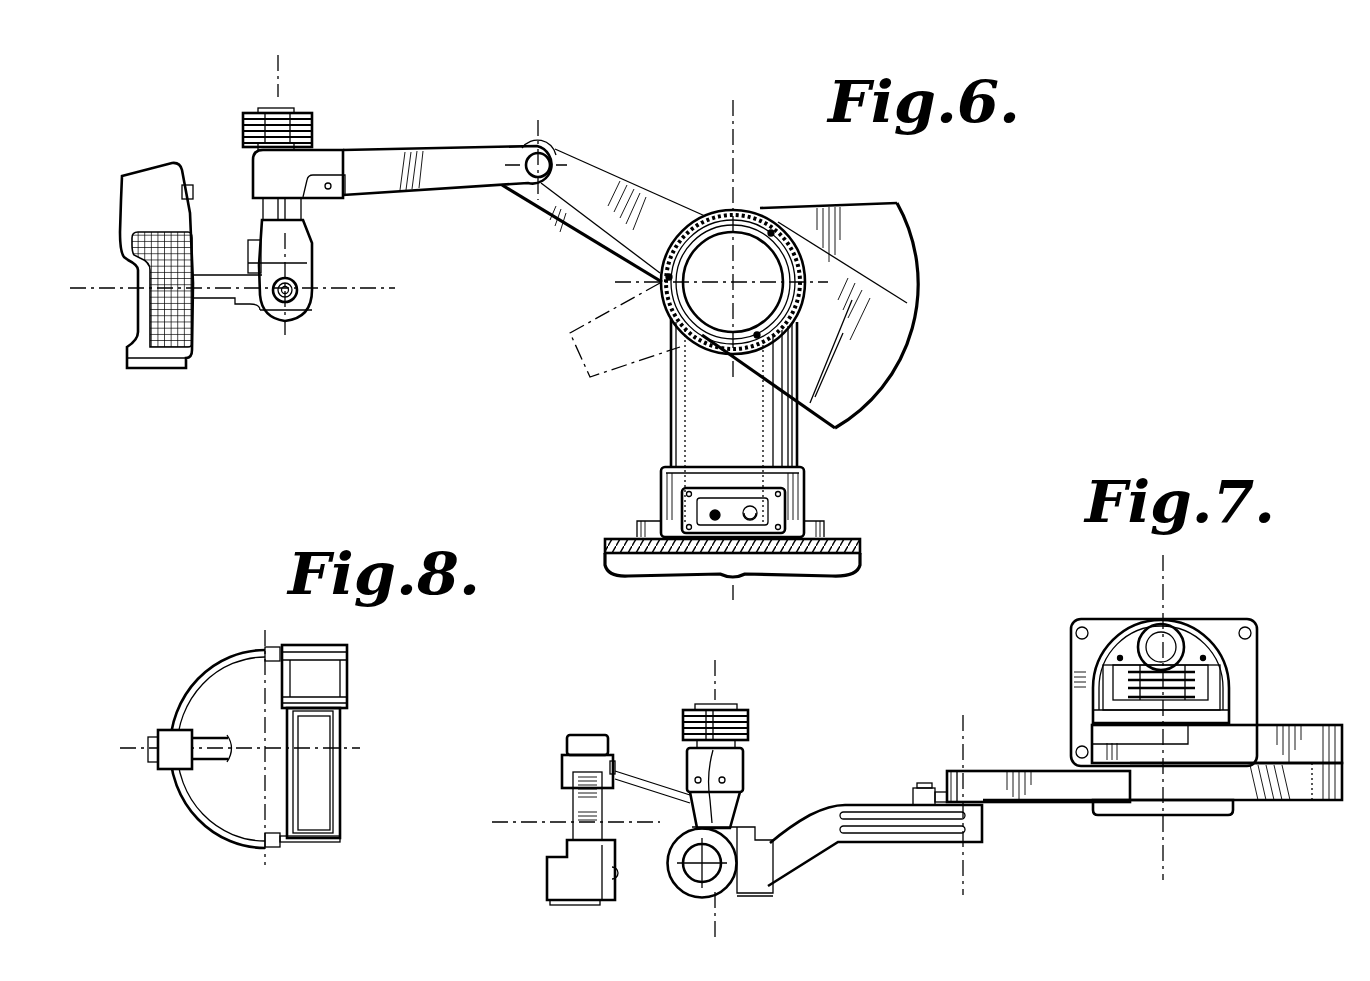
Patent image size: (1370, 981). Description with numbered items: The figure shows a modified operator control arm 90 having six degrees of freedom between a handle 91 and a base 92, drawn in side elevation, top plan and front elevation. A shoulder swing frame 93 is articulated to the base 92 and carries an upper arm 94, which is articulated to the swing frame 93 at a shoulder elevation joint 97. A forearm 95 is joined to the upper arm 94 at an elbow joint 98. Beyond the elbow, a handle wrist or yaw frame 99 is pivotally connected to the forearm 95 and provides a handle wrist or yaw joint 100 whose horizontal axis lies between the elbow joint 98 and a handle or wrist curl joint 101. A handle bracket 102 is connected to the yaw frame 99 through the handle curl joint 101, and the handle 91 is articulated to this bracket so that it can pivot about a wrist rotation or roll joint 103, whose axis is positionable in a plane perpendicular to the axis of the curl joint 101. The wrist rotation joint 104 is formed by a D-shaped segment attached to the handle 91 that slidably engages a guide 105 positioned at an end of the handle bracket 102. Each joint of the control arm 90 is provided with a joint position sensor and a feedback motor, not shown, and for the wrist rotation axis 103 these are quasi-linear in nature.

In FIG. 6, the operator control arm 90 is at (550, 135).
In FIG. 7, the operator control arm 90 is at (988, 847).
In FIG. 6, the handle 91 is at (140, 333).
In FIG. 8, the handle 91 is at (332, 791).
In FIG. 7, the handle 91 is at (550, 883).
In FIG. 6, the base 92 is at (808, 505).
In FIG. 7, the base 92 is at (1213, 627).
In FIG. 6, the shoulder swing frame 93 is at (672, 418).
In FIG. 7, the shoulder swing frame 93 is at (1218, 655).
In FIG. 6, the upper arm 94 is at (657, 203).
In FIG. 7, the upper arm 94 is at (1043, 773).
In FIG. 6, the forearm 95 is at (444, 160).
In FIG. 7, the forearm 95 is at (803, 862).
In FIG. 6, the shoulder elevation joint 97 is at (733, 180).
In FIG. 7, the shoulder elevation joint 97 is at (1163, 868).
In FIG. 6, the elbow joint 98 is at (565, 160).
In FIG. 7, the elbow joint 98 is at (961, 737).
In FIG. 6, the handle wrist or yaw frame 99 is at (312, 240).
In FIG. 7, the handle wrist or yaw frame 99 is at (730, 822).
In FIG. 6, the handle wrist or yaw joint 100 is at (278, 74).
In FIG. 7, the handle wrist or yaw joint 100 is at (665, 867).
In FIG. 6, the handle curl joint 101 is at (333, 292).
In FIG. 6, the handle bracket 102 is at (238, 294).
In FIG. 8, the handle bracket 102 is at (215, 737).
In FIG. 7, the handle bracket 102 is at (638, 777).
In FIG. 6, the wrist rotation or roll joint 103 is at (100, 289).
In FIG. 8, the wrist rotation or roll joint 103 is at (352, 748).
In FIG. 7, the wrist rotation or roll joint 103 is at (506, 823).
In FIG. 8, the wrist rotation joint 104 is at (185, 697).
In FIG. 7, the wrist rotation joint 104 is at (583, 800).
In FIG. 8, the guide 105 is at (165, 768).